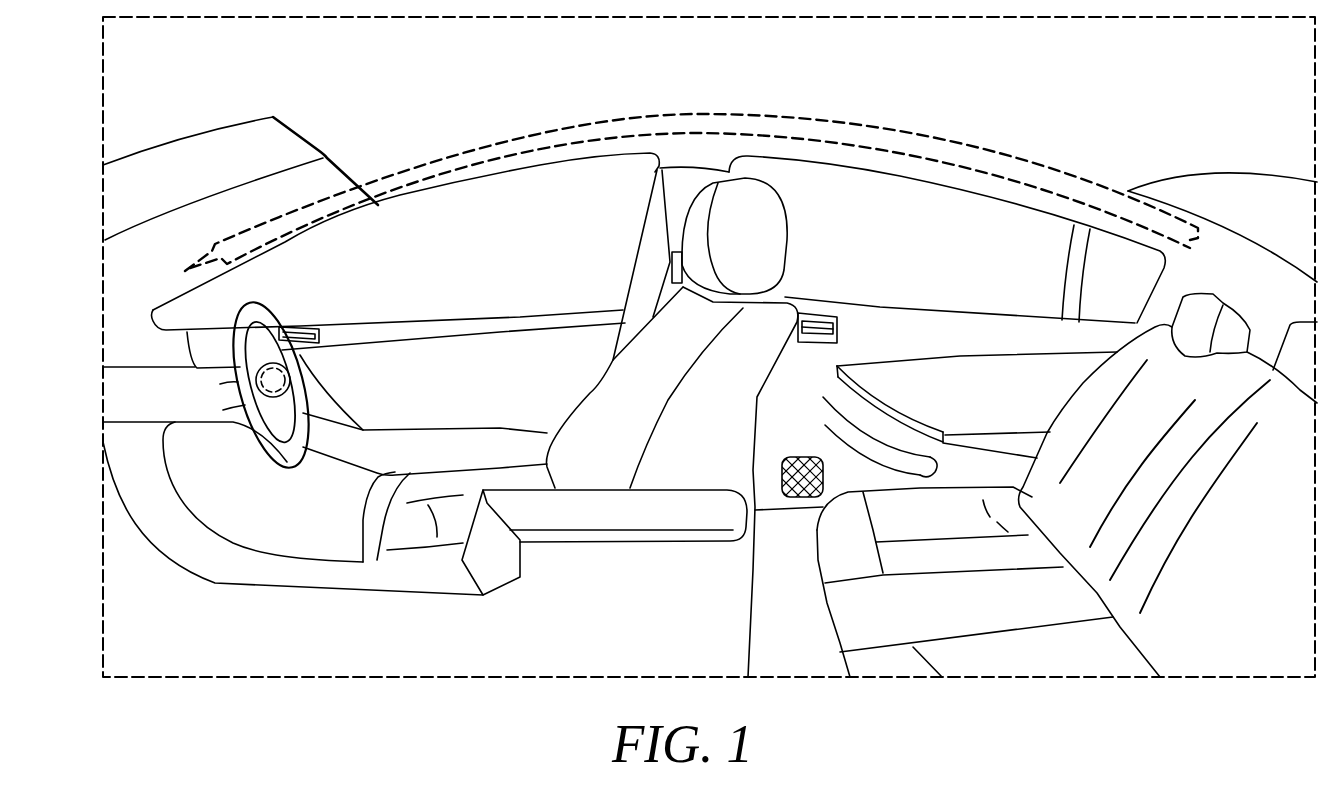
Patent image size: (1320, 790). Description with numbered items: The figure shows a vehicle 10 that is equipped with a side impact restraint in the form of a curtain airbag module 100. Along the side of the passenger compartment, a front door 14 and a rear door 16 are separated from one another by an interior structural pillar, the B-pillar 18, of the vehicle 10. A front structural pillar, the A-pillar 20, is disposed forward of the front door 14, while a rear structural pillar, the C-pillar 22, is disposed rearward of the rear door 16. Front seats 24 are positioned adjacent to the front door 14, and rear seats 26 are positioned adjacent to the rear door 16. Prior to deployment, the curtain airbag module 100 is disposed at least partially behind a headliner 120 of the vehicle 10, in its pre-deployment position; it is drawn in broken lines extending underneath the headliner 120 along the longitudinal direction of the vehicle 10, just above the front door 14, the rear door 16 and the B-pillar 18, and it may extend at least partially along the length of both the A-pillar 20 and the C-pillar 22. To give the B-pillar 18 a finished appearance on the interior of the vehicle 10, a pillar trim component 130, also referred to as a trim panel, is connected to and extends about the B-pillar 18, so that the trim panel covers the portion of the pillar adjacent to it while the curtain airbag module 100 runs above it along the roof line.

The vehicle 10 is at (214, 97).
The front door 14 is at (428, 320).
The rear door 16 is at (992, 315).
The B-pillar 18 is at (646, 218).
The A-pillar 20 is at (185, 203).
The C-pillar 22 is at (1257, 243).
The front seats 24 is at (592, 395).
The rear seats 26 is at (1085, 395).
The curtain airbag module 100 is at (1078, 165).
The headliner 120 is at (915, 181).
The pillar trim component 130 is at (636, 260).